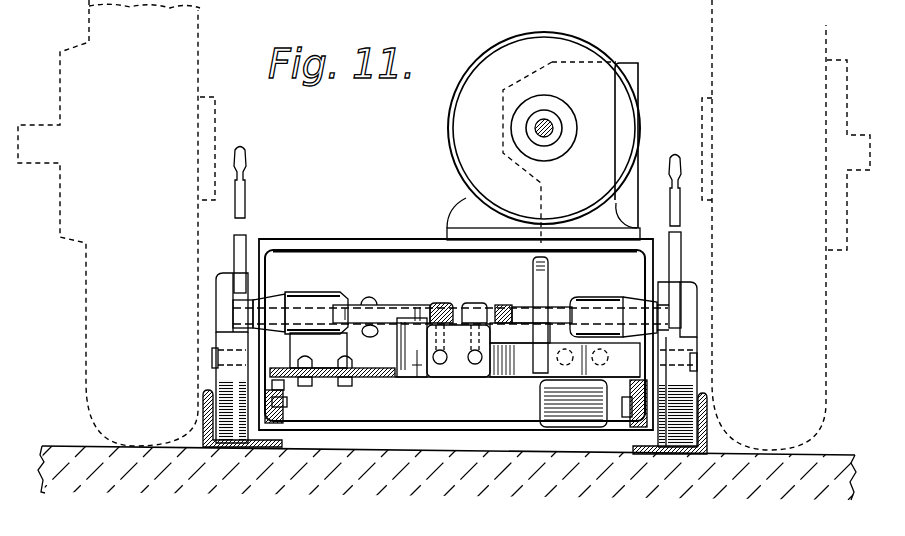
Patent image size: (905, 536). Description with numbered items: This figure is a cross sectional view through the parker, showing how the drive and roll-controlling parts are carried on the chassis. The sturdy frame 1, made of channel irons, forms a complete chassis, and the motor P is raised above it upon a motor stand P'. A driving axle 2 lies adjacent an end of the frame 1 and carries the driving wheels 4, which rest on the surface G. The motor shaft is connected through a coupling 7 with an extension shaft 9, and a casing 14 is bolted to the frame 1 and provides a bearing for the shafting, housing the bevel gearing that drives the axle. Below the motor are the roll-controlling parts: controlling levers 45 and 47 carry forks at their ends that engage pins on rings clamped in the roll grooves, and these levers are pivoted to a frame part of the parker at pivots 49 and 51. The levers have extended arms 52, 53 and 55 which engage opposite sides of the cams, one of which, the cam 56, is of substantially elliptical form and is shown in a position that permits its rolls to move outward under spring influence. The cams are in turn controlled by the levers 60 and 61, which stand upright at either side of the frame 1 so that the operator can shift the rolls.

The motor P is at (517, 137).
The motor stand P' is at (456, 316).
The coupling 7 is at (556, 110).
The extension shaft 9 is at (562, 132).
The casing 14 is at (630, 64).
The lever 61 is at (246, 170).
The lever 60 is at (682, 172).
The driving wheel 4 is at (226, 285).
The driving axle 2 is at (213, 357).
The guide rail G is at (205, 410).
The extended arm 53 is at (543, 310).
The extended arm 55 is at (383, 310).
The extended arm 52 is at (370, 300).
The pivot 51 is at (442, 302).
The pivot 49 is at (473, 303).
The controlling lever 45 is at (512, 302).
The controlling lever 47 is at (430, 320).
The cam 56 is at (540, 268).
The frame 1 is at (285, 380).